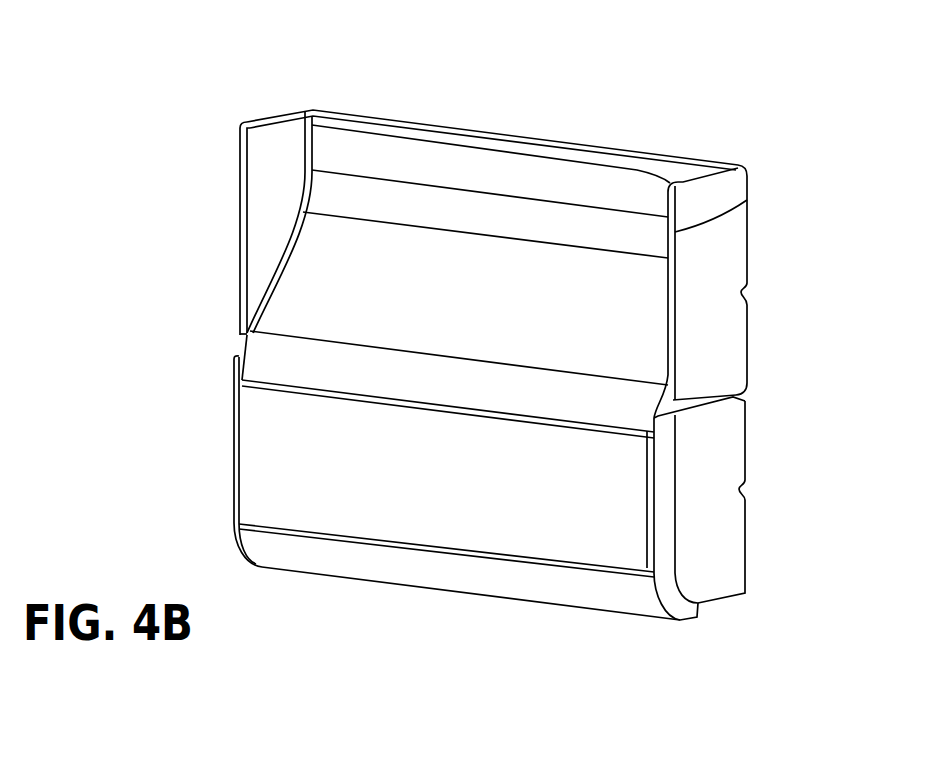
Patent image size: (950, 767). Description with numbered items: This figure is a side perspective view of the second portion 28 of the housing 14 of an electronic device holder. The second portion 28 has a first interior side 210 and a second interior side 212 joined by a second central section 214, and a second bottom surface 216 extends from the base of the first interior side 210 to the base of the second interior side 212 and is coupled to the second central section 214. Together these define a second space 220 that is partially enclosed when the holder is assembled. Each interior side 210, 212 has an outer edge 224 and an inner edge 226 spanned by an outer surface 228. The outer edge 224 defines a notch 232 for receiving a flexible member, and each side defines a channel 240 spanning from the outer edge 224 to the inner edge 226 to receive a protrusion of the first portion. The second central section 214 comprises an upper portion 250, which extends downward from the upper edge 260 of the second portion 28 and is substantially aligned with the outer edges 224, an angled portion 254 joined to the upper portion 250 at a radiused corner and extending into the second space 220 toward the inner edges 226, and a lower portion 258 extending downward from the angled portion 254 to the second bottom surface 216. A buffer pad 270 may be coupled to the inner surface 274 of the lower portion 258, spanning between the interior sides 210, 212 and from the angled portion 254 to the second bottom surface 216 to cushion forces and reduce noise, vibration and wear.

The housing 14 is at (237, 60).
The second portion 28 is at (237, 110).
The upper portion 250 is at (495, 173).
The second space 220 is at (573, 197).
The upper edge 260 is at (677, 163).
The inner edge 226 is at (243, 200).
The outer edge 224 is at (747, 240).
The notch 232 is at (749, 292).
The first interior side 210 is at (727, 338).
The angled portion 254 is at (627, 338).
The channel 240 is at (237, 343).
The second interior side 212 is at (263, 242).
The outer surface 228 is at (240, 288).
The second central section 214 is at (337, 312).
The inner surface 274 is at (330, 370).
The buffer pad 270 is at (267, 492).
The lower portion 258 is at (628, 582).
The second bottom surface 216 is at (723, 607).